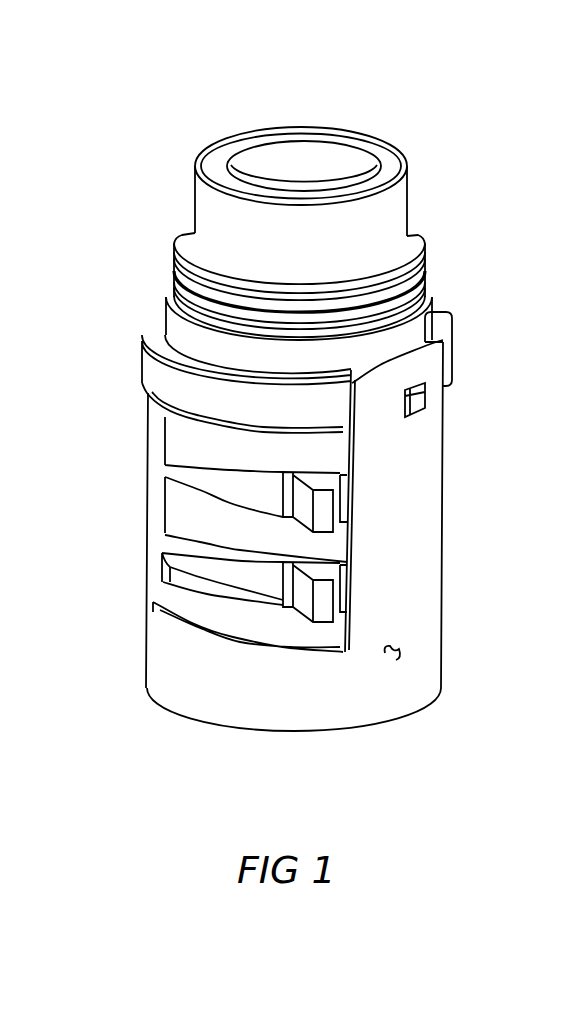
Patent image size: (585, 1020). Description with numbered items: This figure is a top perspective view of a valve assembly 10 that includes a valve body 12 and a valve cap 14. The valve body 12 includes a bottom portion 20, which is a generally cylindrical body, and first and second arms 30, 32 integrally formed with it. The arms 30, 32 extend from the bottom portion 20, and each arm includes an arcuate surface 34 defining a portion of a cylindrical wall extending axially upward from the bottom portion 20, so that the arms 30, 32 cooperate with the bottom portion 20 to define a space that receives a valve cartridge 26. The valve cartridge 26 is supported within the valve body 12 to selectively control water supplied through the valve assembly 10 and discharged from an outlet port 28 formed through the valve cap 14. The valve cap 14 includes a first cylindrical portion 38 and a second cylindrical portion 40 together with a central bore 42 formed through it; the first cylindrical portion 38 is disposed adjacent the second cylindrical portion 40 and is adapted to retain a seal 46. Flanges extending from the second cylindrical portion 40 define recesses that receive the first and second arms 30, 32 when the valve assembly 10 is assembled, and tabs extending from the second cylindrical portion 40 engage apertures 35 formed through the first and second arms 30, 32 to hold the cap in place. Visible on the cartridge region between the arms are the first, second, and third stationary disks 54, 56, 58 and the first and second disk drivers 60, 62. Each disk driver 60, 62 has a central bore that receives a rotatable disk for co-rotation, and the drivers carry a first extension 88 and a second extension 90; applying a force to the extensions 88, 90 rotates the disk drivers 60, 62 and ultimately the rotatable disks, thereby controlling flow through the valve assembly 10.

The valve assembly 10 is at (453, 132).
The valve body 12 is at (441, 630).
The valve cap 14 is at (311, 138).
The bottom portion 20 is at (294, 712).
The valve cartridge 26 is at (292, 557).
The outlet port 28 is at (243, 160).
The first arm 30 is at (155, 412).
The second arm 32 is at (423, 418).
The arcuate surface 34 is at (395, 660).
The apertures 35 is at (455, 352).
The first cylindrical portion 38 is at (207, 213).
The second cylindrical portion 40 is at (183, 331).
The central bore 42 is at (304, 158).
The seal 46 is at (420, 290).
The first stationary disk 54 is at (222, 628).
The second stationary disk 56 is at (325, 547).
The third stationary disk 58 is at (325, 453).
The first disk driver 60 is at (190, 568).
The second disk driver 62 is at (190, 467).
The first extension 88 is at (327, 596).
The second extension 90 is at (325, 510).